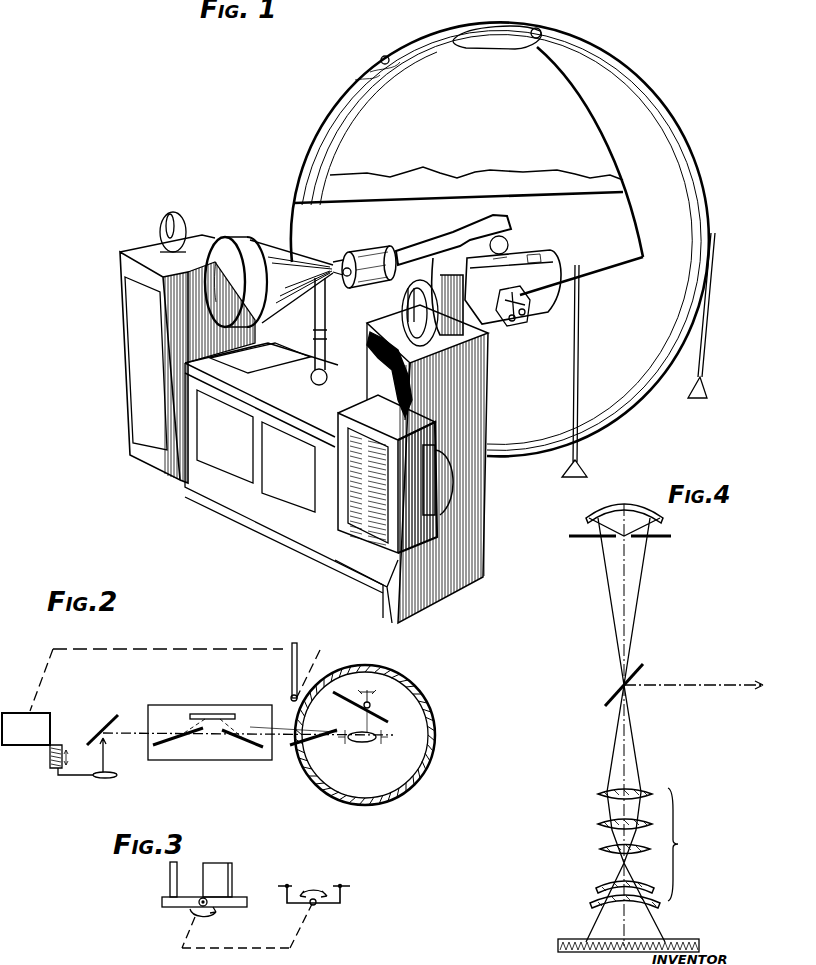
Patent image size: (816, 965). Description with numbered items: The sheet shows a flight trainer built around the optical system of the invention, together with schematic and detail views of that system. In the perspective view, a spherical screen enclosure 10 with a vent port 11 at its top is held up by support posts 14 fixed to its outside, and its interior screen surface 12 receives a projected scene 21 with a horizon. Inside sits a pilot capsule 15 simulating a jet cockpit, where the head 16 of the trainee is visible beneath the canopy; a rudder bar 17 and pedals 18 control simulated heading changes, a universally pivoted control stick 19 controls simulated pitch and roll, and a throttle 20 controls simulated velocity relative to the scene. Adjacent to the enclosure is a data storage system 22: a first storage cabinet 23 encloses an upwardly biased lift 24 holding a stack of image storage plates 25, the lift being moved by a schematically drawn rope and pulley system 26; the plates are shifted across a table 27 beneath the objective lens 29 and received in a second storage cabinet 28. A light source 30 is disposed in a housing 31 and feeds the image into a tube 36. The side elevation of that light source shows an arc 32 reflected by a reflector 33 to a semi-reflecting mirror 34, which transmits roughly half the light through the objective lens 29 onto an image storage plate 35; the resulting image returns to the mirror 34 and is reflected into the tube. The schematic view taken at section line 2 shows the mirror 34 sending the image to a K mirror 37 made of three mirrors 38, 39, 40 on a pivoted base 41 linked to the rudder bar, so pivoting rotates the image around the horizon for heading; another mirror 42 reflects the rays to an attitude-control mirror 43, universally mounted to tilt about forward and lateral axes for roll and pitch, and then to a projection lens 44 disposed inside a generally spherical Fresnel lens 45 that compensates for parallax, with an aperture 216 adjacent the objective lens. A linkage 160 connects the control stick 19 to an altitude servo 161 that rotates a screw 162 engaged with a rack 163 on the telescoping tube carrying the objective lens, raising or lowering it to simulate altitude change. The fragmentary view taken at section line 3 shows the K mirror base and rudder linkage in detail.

In FIG. 1, the section line 2— 2 is at (545, 230).
In FIG. 2, the section line 3— 3 is at (135, 697).
In FIG. 1, the spherical screen enclosure 10 is at (690, 146).
In FIG. 1, the vent port 11 is at (536, 30).
In FIG. 1, the interior screen surface 12 is at (383, 55).
In FIG. 1, the support posts 14 is at (580, 446).
In FIG. 1, the pilot capsule 15 is at (566, 281).
In FIG. 1, the head of the trainee 16 is at (460, 243).
In FIG. 1, the rudder bar 17 is at (540, 275).
In FIG. 3, the rudder bar 17 is at (316, 906).
In FIG. 1, the pedals 18 is at (534, 316).
In FIG. 3, the pedals 18 is at (289, 886).
In FIG. 1, the control stick 19 is at (524, 322).
In FIG. 2, the control stick 19 is at (299, 646).
In FIG. 1, the throttle 20 is at (498, 302).
In FIG. 1, the scene 21 is at (443, 172).
In FIG. 1, the data storage system 22 is at (94, 449).
In FIG. 1, the first storage cabinet 23 is at (485, 510).
In FIG. 1, the lift 24 is at (340, 537).
In FIG. 1, the image storage plates 25 is at (355, 505).
In FIG. 1, the rope and pulley system 26 is at (438, 340).
In FIG. 1, the table 27 is at (290, 396).
In FIG. 1, the second storage cabinet 28 is at (127, 386).
In FIG. 1, the objective lens 29 is at (326, 372).
In FIG. 2, the objective lens 29 is at (109, 772).
In FIG. 4, the objective lens 29 is at (649, 848).
In FIG. 1, the light source 30 is at (269, 266).
In FIG. 4, the light source 30 is at (593, 737).
In FIG. 1, the housing 31 is at (262, 246).
In FIG. 4, the arc 32 is at (662, 540).
In FIG. 4, the reflector 33 is at (607, 512).
In FIG. 2, the semi-reflecting mirror 34 is at (110, 722).
In FIG. 4, the semi-reflecting mirror 34 is at (614, 692).
In FIG. 4, the image storage plate 35 is at (680, 939).
In FIG. 1, the tube 36 is at (405, 249).
In FIG. 2, the K mirror 37 is at (218, 706).
In FIG. 3, the K mirror 37 is at (158, 893).
In FIG. 2, the mirror 38 is at (173, 746).
In FIG. 3, the mirror 38 is at (233, 872).
In FIG. 2, the mirror 39 is at (206, 714).
In FIG. 3, the mirror 39 is at (169, 873).
In FIG. 2, the mirror 40 is at (245, 747).
In FIG. 2, the pivoted base 41 is at (210, 761).
In FIG. 3, the pivoted base 41 is at (230, 907).
In FIG. 2, the mirror 42 is at (300, 752).
In FIG. 2, the attitude-control mirror 43 is at (392, 720).
In FIG. 2, the projection lens 44 is at (358, 743).
In FIG. 1, the Fresnel lens 45 is at (510, 243).
In FIG. 2, the Fresnel lens 45 is at (436, 748).
In FIG. 2, the linkage 160 is at (150, 649).
In FIG. 2, the altitude servo 161 is at (38, 713).
In FIG. 2, the screw 162 is at (50, 766).
In FIG. 2, the rack 163 is at (60, 773).
In FIG. 2, the aperture 216 is at (378, 737).